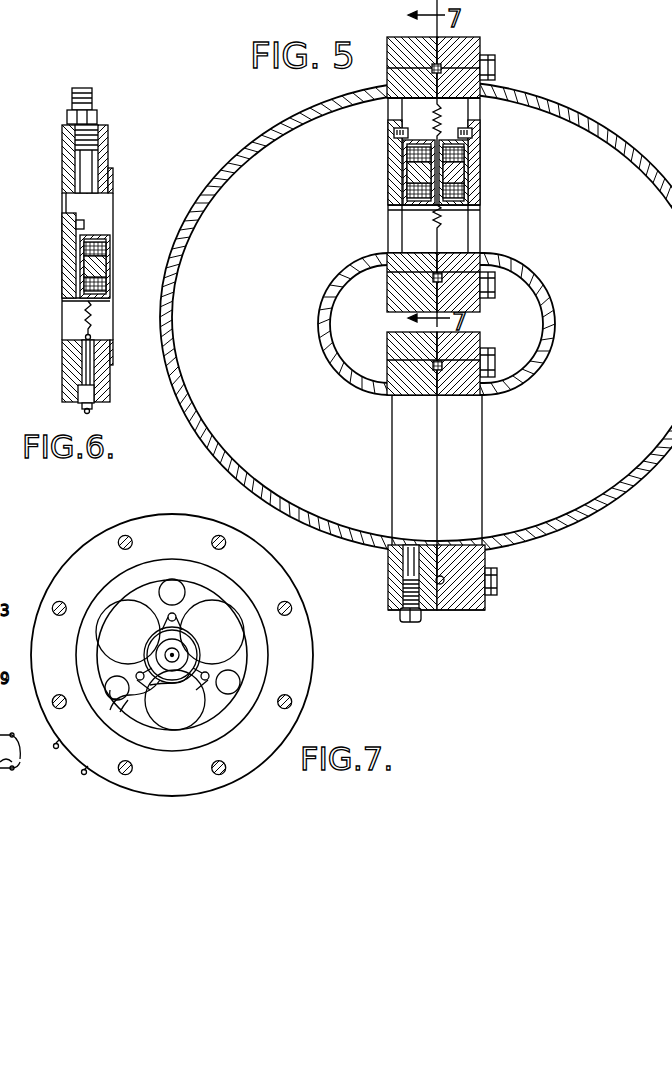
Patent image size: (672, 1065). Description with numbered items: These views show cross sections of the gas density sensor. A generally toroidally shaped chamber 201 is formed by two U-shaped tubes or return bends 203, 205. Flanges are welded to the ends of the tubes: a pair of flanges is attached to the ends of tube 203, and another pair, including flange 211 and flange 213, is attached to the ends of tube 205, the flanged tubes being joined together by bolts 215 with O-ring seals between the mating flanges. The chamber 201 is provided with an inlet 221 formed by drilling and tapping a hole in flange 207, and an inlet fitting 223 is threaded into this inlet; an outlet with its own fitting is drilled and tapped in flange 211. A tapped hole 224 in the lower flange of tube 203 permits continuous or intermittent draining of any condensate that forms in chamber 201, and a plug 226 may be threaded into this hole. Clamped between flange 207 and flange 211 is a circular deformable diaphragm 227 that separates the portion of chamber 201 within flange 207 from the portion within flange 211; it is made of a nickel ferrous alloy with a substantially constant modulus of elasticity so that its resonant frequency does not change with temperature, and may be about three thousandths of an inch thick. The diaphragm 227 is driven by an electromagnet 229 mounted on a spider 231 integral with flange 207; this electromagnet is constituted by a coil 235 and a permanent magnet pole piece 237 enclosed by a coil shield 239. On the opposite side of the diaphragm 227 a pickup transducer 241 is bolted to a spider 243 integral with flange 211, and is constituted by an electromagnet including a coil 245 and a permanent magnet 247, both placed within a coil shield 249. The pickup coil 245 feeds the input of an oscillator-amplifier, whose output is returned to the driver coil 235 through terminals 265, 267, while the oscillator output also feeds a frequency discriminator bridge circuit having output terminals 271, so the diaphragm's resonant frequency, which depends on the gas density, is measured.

In FIG. 5, the chamber 201 is at (416, 328).
In FIG. 5, the tube 203 is at (254, 133).
In FIG. 5, the tube 205 is at (600, 122).
In FIG. 6, the flange 207 is at (91, 140).
In FIG. 7, the flange 207 is at (195, 643).
In FIG. 5, the flange 211 is at (480, 37).
In FIG. 5, the flange 213 is at (449, 596).
In FIG. 7, the bolts 215 is at (292, 700).
In FIG. 6, the inlet 221 is at (98, 167).
In FIG. 6, the inlet fitting 223 is at (92, 103).
In FIG. 5, the tapped hole 224 is at (405, 567).
In FIG. 5, the plug 226 is at (412, 622).
In FIG. 5, the diaphragm 227 is at (440, 116).
In FIG. 5, the electromagnet 229 is at (391, 191).
In FIG. 6, the electromagnet 229 is at (86, 287).
In FIG. 7, the electromagnet 229 is at (173, 659).
In FIG. 5, the spider 231 is at (388, 131).
In FIG. 6, the spider 231 is at (62, 291).
In FIG. 7, the spider 231 is at (184, 606).
In FIG. 5, the coil 235 is at (405, 158).
In FIG. 6, the coil 235 is at (80, 244).
In FIG. 7, the coil 235 is at (200, 647).
In FIG. 5, the permanent magnet pole piece 237 is at (420, 176).
In FIG. 6, the permanent magnet pole piece 237 is at (76, 268).
In FIG. 7, the permanent magnet pole piece 237 is at (168, 652).
In FIG. 5, the coil shield 239 is at (421, 211).
In FIG. 7, the coil shield 239 is at (188, 682).
In FIG. 5, the pickup transducer 241 is at (483, 191).
In FIG. 5, the spider 243 is at (482, 133).
In FIG. 5, the coil 245 is at (482, 151).
In FIG. 5, the permanent magnet 247 is at (470, 172).
In FIG. 5, the coil shield 249 is at (472, 205).
In FIG. 7, the terminal 265 is at (84, 775).
In FIG. 6, the terminal 267 is at (94, 407).
In FIG. 7, the terminal 267 is at (53, 743).
In FIG. 7, the output terminals 271 is at (21, 766).